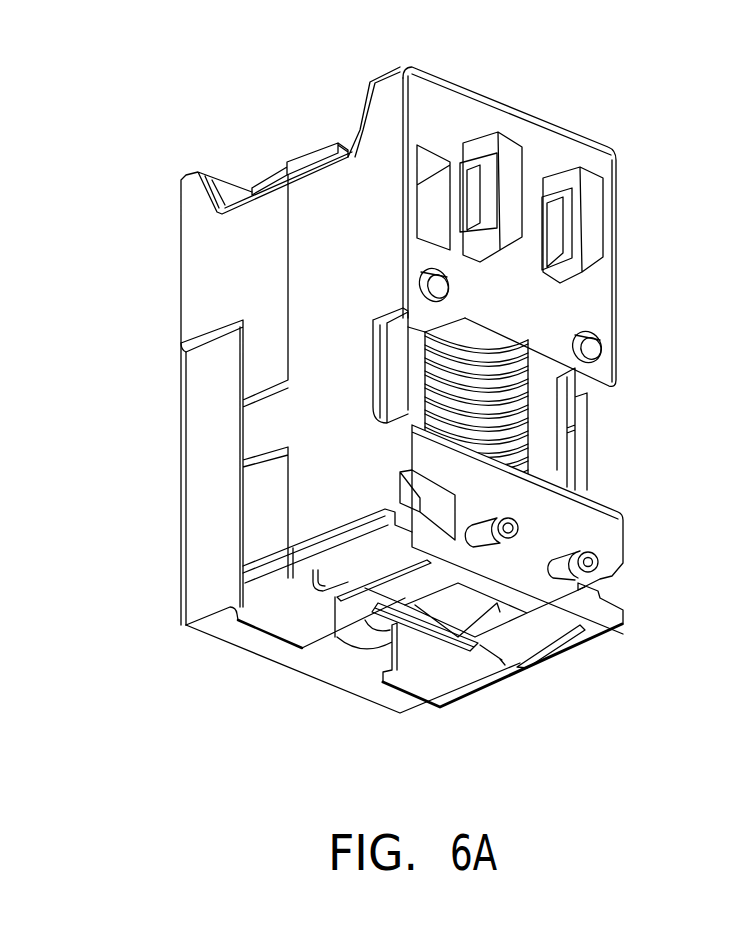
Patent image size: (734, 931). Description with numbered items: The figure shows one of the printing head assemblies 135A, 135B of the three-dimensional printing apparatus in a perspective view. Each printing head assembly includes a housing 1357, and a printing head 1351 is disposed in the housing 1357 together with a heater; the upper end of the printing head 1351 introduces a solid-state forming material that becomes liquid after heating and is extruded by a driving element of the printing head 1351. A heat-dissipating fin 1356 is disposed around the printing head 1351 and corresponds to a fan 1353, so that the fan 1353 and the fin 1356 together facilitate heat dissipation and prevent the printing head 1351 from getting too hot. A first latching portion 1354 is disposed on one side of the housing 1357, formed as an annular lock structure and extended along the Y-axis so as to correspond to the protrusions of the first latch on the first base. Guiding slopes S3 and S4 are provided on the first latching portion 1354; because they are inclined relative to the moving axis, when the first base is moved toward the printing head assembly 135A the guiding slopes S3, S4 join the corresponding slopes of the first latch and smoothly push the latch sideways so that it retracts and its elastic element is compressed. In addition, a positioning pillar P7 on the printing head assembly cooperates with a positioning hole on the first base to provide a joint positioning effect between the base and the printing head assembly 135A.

The printing head assembly 135A is at (228, 109).
The printing head assembly 135B is at (389, 398).
The printing head 1351 is at (458, 612).
The fan 1353 is at (206, 468).
The first latching portion 1354 is at (595, 173).
The heat-dissipating fin 1356 is at (527, 410).
The housing 1357 is at (323, 187).
The guiding slope S3 is at (497, 146).
The guiding slope S4 is at (590, 217).
The positioning pillar P7 is at (565, 577).